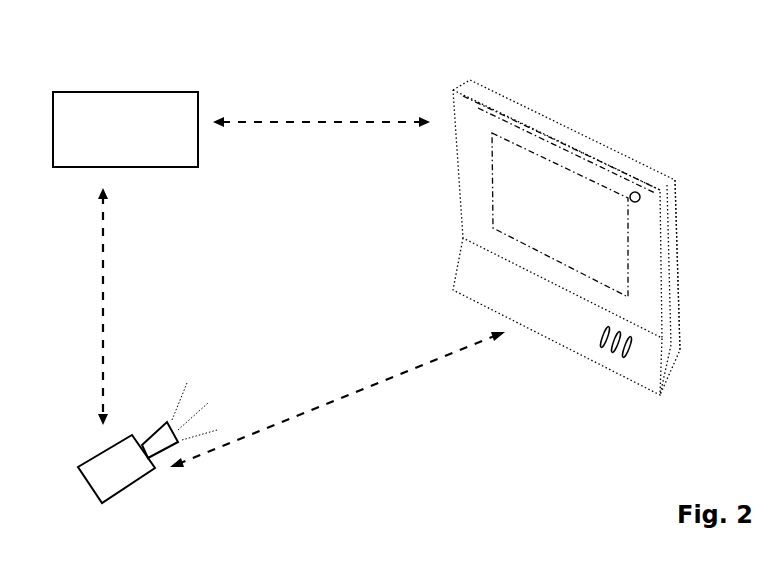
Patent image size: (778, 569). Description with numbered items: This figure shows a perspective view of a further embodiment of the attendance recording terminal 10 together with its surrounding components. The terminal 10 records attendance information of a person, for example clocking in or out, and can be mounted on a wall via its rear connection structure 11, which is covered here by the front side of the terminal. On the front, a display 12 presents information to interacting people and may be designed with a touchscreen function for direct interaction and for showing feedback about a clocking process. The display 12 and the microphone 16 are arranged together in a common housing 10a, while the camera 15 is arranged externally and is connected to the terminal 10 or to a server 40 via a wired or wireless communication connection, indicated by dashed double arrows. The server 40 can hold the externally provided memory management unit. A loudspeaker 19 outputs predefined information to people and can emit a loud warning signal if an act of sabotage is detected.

The attendance recording terminal 10 is at (553, 209).
The common housing 10a is at (490, 100).
The rear connection structure 11 is at (679, 181).
The display 12 is at (507, 183).
The camera 15 is at (123, 477).
The microphone 16 is at (635, 192).
The loudspeaker 19 is at (586, 350).
The server 40 is at (166, 92).